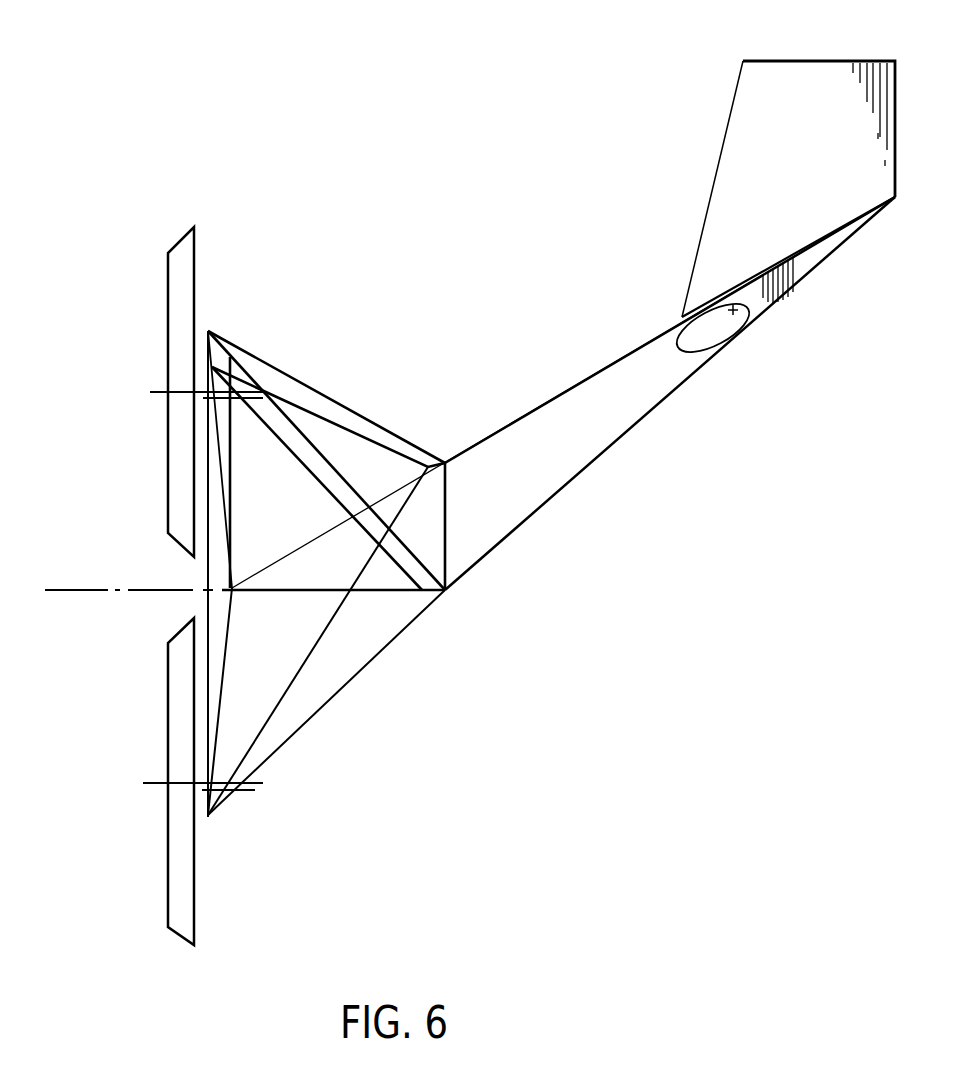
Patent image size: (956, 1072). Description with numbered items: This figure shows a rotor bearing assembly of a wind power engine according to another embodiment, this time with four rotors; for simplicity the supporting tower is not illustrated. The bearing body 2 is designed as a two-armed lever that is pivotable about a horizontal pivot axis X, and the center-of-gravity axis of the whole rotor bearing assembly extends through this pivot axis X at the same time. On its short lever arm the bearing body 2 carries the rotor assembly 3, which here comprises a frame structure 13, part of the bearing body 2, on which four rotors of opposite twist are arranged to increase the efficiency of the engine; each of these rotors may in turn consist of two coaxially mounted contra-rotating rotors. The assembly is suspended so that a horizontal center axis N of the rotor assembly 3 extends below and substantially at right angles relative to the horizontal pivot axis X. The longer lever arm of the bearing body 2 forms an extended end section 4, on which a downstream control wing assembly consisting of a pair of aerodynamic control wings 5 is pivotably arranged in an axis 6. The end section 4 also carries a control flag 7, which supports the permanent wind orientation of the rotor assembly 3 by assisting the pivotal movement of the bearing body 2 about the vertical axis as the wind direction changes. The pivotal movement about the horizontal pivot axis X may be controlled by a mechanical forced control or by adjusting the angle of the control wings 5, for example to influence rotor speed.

The bearing body 2 is at (312, 412).
The rotor assembly 3 is at (172, 253).
The end section 4 is at (570, 482).
The control wing 5 is at (740, 332).
The axis 6 is at (768, 312).
The control flag 7 is at (740, 115).
The frame structure 13 is at (357, 673).
The horizontal pivot axis X is at (363, 510).
The horizontal center axis N is at (67, 591).